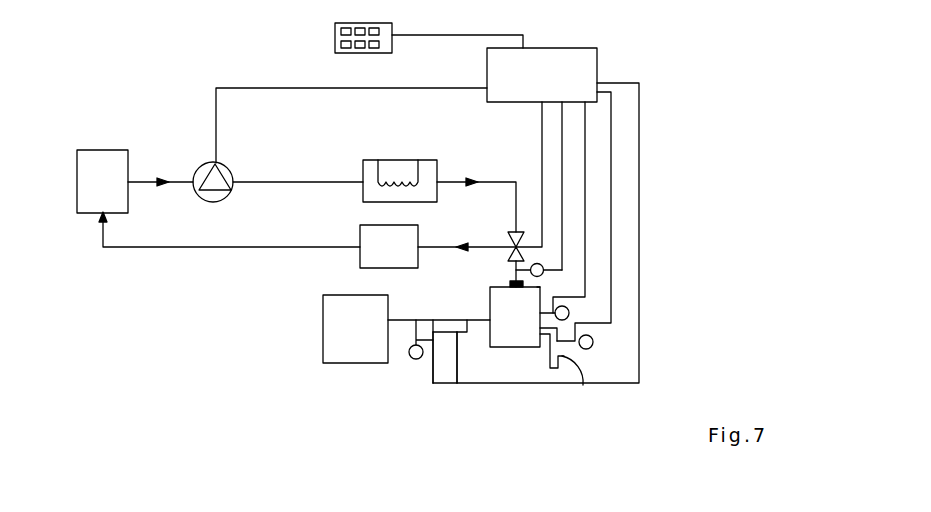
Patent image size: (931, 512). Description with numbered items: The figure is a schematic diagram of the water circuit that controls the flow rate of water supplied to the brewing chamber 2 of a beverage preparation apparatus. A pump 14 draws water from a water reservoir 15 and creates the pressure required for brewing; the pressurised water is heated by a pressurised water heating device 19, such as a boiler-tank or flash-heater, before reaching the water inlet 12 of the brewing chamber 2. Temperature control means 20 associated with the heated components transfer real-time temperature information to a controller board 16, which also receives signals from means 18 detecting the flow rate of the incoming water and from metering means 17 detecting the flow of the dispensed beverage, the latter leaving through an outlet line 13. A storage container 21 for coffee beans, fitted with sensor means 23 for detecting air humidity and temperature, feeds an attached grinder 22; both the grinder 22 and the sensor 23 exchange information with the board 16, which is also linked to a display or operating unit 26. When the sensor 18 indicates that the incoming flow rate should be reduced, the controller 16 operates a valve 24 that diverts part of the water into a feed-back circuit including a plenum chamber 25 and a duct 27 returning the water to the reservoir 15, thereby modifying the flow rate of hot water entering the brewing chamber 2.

The brewing chamber 2 is at (513, 342).
The water inlet 12 is at (545, 284).
The outlet pipe 13 is at (583, 385).
The pump 14 is at (198, 163).
The water reservoir 15 is at (94, 203).
The controller board 16 is at (598, 65).
The metering means 17 is at (593, 341).
The flow rate detecting means 18 is at (543, 266).
The pressurised water heating device 19 is at (400, 165).
The temperature control means 20 is at (569, 311).
The storage container 21 is at (333, 350).
The grinder 22 is at (452, 326).
The sensor means 23 is at (413, 359).
The valve 24 is at (506, 255).
The plenum chamber 25 is at (367, 256).
The operating unit 26 is at (333, 40).
The duct 27 is at (198, 249).